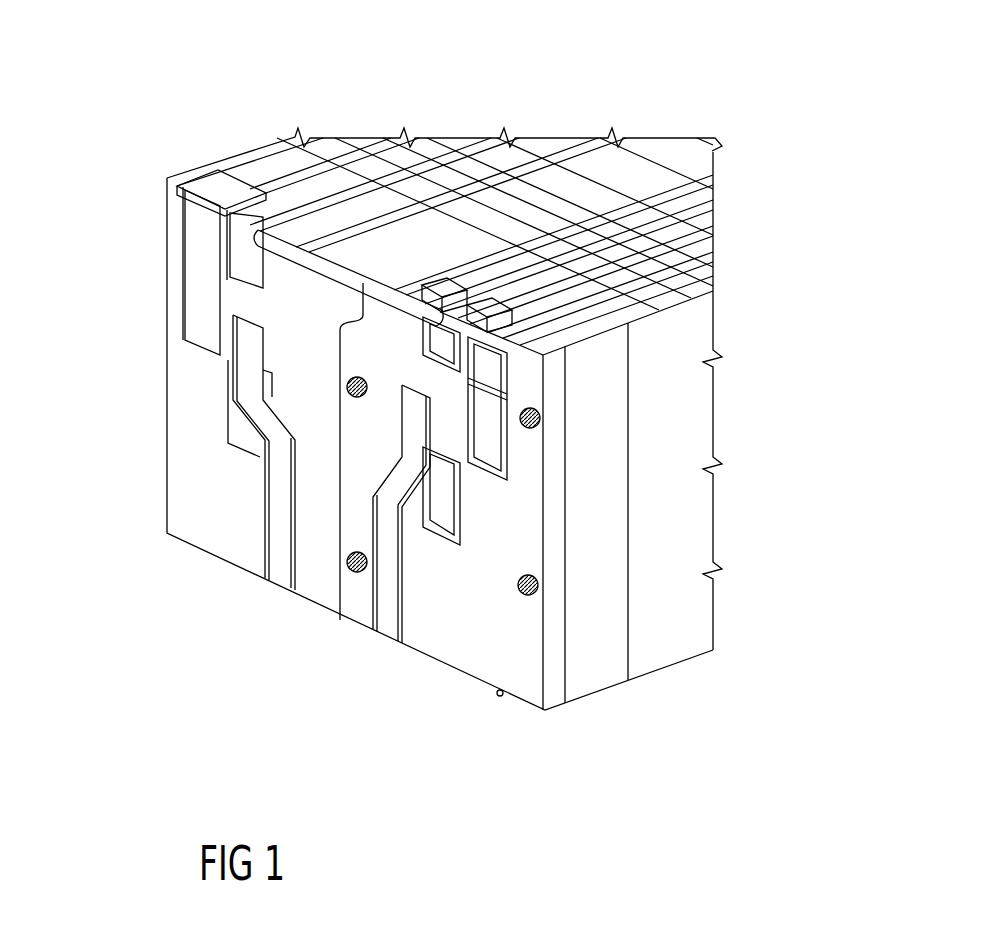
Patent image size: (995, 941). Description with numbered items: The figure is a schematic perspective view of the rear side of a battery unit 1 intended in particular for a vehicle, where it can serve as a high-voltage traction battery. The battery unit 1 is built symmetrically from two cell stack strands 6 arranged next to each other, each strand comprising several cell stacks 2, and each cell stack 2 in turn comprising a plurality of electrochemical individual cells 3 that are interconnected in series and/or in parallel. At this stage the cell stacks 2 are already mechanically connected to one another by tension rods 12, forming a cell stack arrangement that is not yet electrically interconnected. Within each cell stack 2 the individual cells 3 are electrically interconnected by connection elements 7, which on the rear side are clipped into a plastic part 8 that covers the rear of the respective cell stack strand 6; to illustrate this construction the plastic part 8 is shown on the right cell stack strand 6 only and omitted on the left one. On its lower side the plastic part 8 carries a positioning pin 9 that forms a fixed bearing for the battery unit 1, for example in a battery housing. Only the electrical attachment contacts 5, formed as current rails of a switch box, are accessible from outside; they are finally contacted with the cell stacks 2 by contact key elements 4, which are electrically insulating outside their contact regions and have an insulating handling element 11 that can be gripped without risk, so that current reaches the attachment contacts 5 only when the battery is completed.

The battery unit 1 is at (772, 96).
The cell stack 2 is at (212, 148).
The individual cell 3 is at (425, 190).
The contact key element 4 is at (337, 253).
The electrical attachment contact 5 is at (277, 588).
The cell stack strand 6 is at (497, 128).
The connection element 7 is at (207, 528).
The plastic part 8 is at (455, 657).
The positioning pin 9 is at (500, 696).
The handling element 11 is at (240, 262).
The tension rod 12 is at (543, 418).